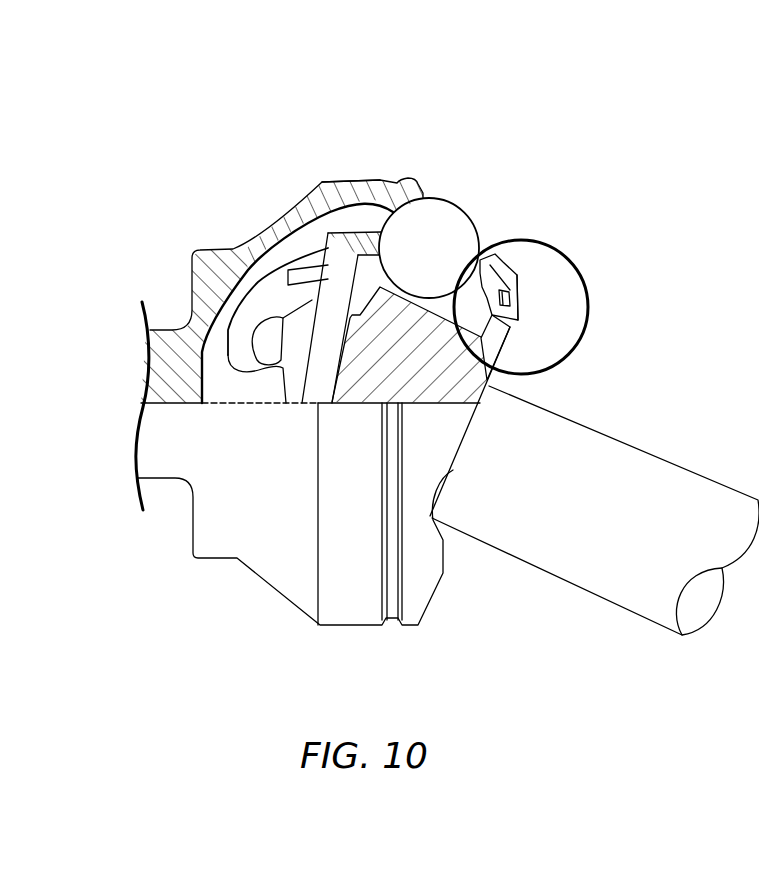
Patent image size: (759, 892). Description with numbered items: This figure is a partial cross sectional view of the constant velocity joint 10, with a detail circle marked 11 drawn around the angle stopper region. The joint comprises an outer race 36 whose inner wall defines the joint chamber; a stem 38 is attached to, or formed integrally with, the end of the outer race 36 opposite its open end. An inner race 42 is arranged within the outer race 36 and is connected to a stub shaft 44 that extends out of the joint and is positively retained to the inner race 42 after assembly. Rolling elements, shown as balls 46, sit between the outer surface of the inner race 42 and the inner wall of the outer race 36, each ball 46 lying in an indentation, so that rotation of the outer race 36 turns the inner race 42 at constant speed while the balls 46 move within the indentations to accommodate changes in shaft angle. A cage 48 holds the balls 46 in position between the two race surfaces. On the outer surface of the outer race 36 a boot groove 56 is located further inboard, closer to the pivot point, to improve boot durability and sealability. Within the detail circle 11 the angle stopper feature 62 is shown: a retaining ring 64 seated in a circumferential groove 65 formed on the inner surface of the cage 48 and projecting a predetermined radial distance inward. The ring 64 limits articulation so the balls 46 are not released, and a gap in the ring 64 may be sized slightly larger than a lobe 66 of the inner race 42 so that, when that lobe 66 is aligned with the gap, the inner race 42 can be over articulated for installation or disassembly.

The constant velocity joint 10 is at (230, 219).
The detail indicator 11 is at (589, 305).
The outer race 36 is at (407, 188).
The stem 38 is at (172, 337).
The inner race 42 is at (470, 393).
The stub shaft 44 is at (632, 466).
The rolling elements 46 is at (440, 217).
The cage 48 is at (493, 272).
The boot groove 56 is at (392, 627).
The angle stopper feature 62 is at (529, 317).
The retaining ring 64 is at (522, 302).
The circumferential groove 65 is at (485, 290).
The lobe 66 is at (497, 342).